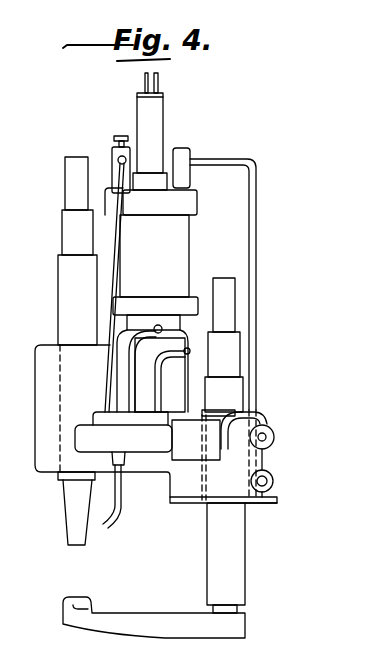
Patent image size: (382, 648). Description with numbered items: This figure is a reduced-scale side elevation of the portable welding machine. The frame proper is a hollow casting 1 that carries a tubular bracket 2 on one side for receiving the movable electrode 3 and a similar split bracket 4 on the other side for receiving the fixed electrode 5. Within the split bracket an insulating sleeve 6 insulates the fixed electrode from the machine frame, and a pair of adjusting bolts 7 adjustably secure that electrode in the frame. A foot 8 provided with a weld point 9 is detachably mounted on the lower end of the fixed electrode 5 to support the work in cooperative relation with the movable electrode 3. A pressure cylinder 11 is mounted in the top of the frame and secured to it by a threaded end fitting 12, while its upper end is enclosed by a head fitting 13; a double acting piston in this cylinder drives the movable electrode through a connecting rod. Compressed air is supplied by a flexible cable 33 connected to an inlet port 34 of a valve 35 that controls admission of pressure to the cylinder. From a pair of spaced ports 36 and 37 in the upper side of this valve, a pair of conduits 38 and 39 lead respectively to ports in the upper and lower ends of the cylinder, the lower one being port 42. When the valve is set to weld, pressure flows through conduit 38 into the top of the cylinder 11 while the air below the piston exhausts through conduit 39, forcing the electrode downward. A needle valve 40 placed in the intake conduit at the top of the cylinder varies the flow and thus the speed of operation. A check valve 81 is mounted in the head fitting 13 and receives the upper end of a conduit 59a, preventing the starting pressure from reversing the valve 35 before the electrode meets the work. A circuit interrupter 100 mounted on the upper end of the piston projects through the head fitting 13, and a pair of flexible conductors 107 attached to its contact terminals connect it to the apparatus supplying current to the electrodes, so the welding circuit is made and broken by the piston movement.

The hollow casting 1 is at (175, 494).
The tubular bracket 2 is at (37, 383).
The movable electrode 3 is at (68, 280).
The split bracket 4 is at (267, 502).
The fixed electrode 5 is at (227, 300).
The insulating sleeve 6 is at (248, 504).
The adjusting bolts 7 is at (280, 457).
The foot 8 is at (142, 623).
The weld point 9 is at (78, 597).
The pressure cylinder 11 is at (185, 241).
The threaded end fitting 12 is at (200, 311).
The head fitting 13 is at (198, 208).
The flexible cable 33 is at (118, 518).
The inlet port 34 is at (122, 464).
The valve 35 is at (130, 446).
The port 36 is at (105, 416).
The port 37 is at (123, 413).
The conduit 38 is at (122, 234).
The conduit 39 is at (135, 347).
The needle valve 40 is at (122, 135).
The port 42 is at (160, 325).
The conduit 59a is at (296, 209).
The check valve 81 is at (191, 150).
The circuit interrupter 100 is at (173, 105).
The flexible conductors 107 is at (162, 85).